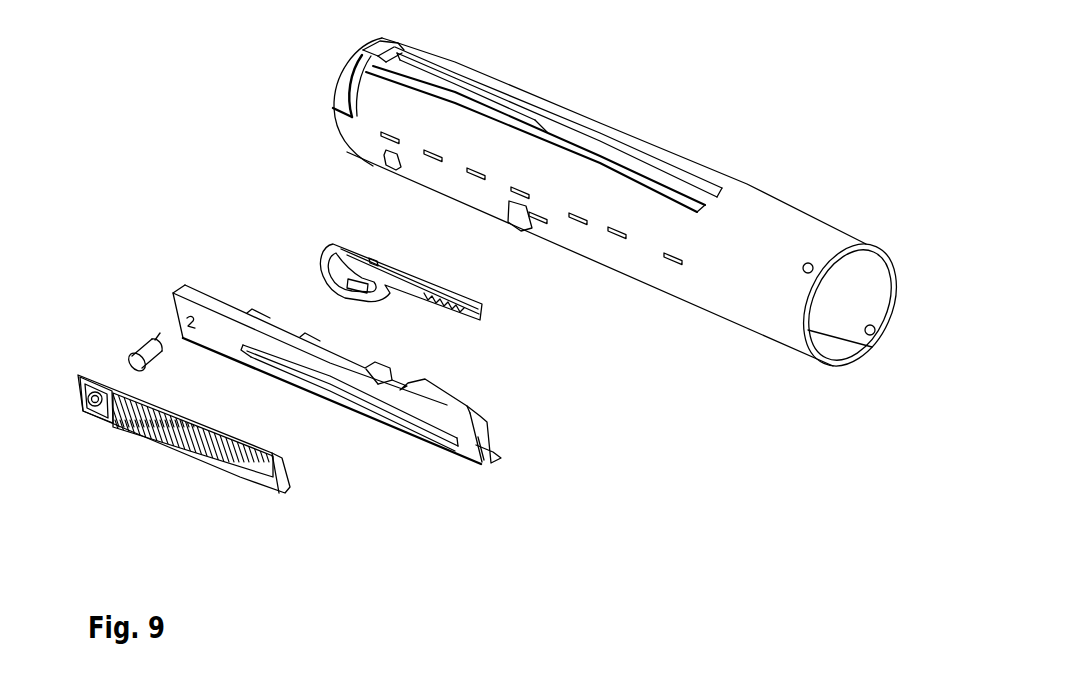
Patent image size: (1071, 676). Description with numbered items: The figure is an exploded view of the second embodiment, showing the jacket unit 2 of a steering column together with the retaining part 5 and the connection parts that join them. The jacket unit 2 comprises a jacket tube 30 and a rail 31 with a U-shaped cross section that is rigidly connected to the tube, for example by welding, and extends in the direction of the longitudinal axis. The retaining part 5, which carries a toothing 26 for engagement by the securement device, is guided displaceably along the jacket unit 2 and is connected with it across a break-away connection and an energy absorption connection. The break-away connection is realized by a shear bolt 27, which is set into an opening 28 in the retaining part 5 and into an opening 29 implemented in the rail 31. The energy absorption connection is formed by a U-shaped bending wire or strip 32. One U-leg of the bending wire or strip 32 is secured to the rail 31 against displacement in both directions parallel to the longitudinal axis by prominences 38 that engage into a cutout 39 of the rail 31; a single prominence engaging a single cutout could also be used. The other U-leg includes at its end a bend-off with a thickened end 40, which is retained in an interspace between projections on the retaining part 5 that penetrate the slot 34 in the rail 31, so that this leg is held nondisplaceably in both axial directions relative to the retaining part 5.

The jacket unit 2 is at (486, 441).
The retaining part 5 is at (310, 535).
The toothing 26 is at (160, 440).
The shear bolt 27 is at (141, 340).
The opening 28 is at (89, 376).
The opening 29 is at (190, 318).
The jacket tube 30 is at (725, 203).
The rail 31 is at (477, 456).
The bending wire or strip 32 is at (390, 250).
The slot 34 is at (434, 451).
The prominences 38 is at (452, 303).
The cutout 39 is at (338, 367).
The thickened end 40 is at (392, 288).